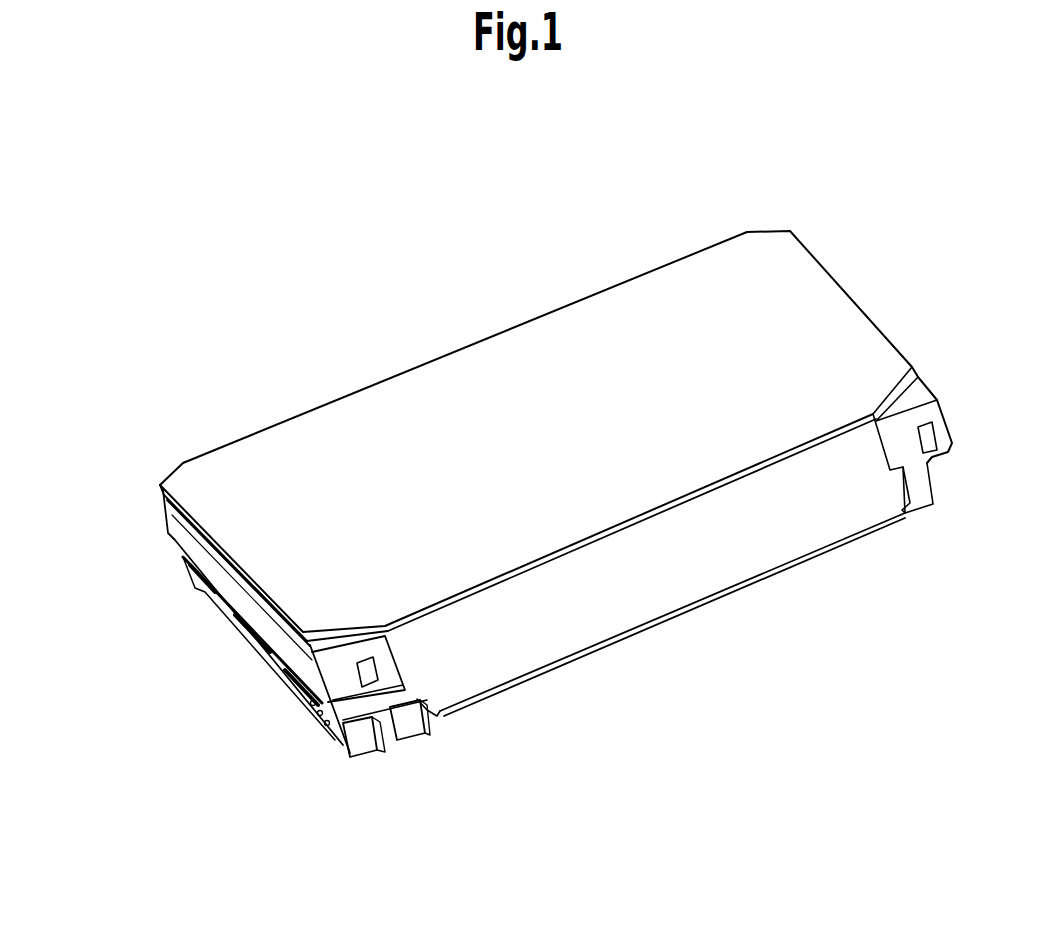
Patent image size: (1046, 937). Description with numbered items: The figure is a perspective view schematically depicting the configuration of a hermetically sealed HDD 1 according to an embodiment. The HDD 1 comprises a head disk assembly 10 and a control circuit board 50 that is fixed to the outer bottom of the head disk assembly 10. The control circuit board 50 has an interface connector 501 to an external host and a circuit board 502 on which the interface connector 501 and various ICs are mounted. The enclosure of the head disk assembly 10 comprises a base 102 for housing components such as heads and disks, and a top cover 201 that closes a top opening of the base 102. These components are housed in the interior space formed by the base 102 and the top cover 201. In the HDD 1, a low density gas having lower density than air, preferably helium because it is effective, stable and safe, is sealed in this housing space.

The HDD 1 is at (308, 214).
The head disk assembly 10 is at (386, 356).
The base 102 is at (765, 547).
The top cover 201 is at (267, 532).
The control circuit board 50 is at (606, 686).
The interface connector 501 is at (372, 757).
The circuit board 502 is at (497, 690).